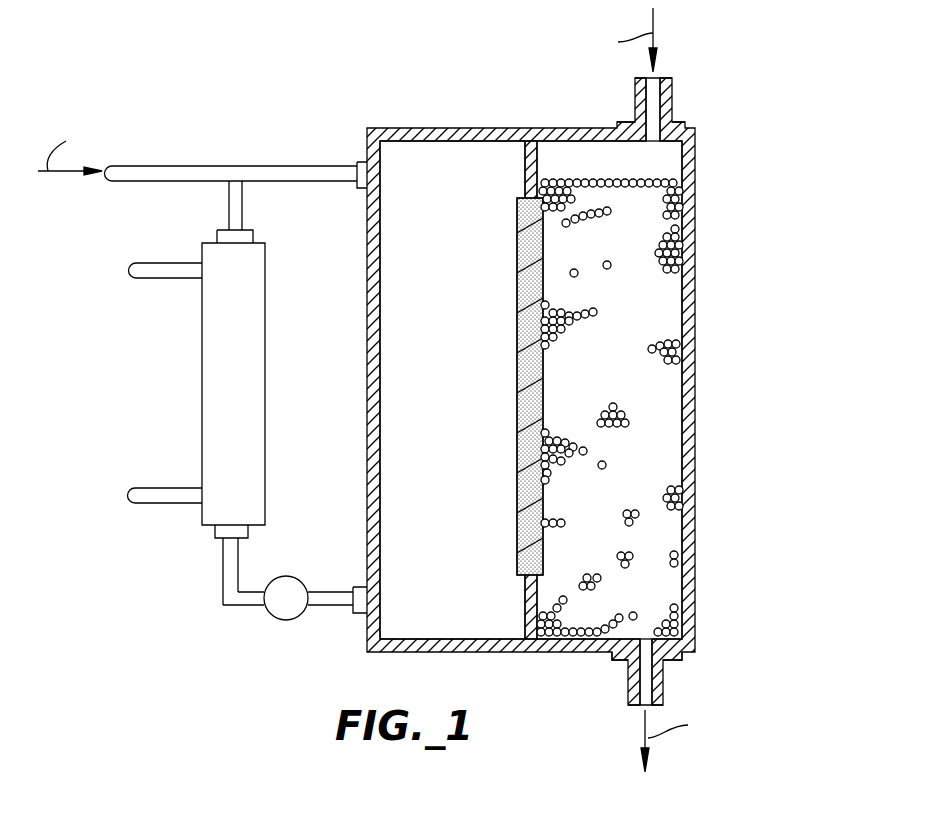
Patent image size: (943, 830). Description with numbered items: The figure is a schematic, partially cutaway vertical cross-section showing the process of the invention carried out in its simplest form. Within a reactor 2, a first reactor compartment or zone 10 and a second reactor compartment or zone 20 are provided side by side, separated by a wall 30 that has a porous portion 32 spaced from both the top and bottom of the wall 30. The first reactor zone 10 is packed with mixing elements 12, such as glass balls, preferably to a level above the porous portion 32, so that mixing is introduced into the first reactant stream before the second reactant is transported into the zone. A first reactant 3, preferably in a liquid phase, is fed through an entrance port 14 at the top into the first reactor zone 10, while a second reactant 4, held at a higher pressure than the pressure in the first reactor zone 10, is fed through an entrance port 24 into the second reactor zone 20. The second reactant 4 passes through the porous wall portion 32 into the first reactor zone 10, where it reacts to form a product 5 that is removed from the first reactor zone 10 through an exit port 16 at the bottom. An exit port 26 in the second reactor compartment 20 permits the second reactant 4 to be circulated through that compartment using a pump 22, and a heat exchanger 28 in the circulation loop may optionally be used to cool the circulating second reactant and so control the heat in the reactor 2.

The reactor 2 is at (497, 128).
The first reactant 3 is at (655, 20).
The second reactant 4 is at (65, 180).
The product 5 is at (645, 718).
The first reactor compartment or zone 10 is at (626, 372).
The mixing elements 12 is at (613, 182).
The entrance port 14 is at (635, 108).
The exit port 16 is at (628, 680).
The second reactor compartment or zone 20 is at (399, 378).
The pump 22 is at (272, 615).
The entrance port 24 is at (326, 166).
The exit port 26 is at (335, 592).
The heat exchanger 28 is at (202, 410).
The wall 30 is at (527, 175).
The porous portion 32 is at (518, 290).